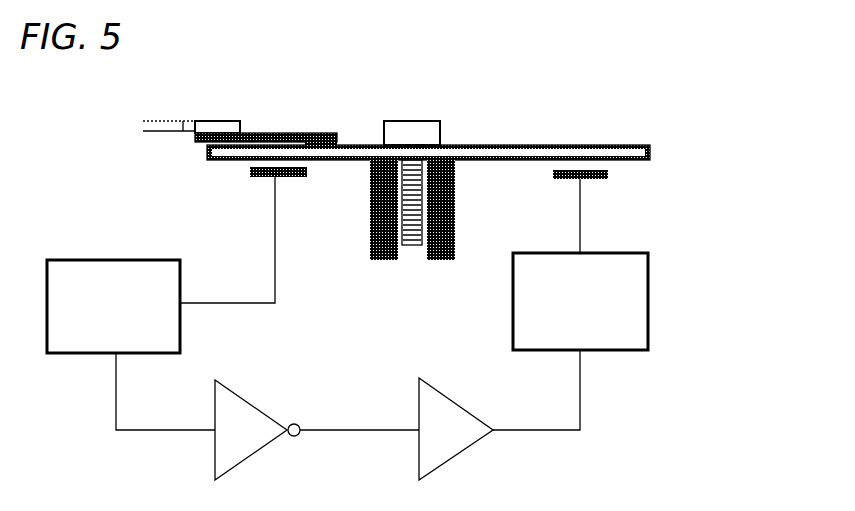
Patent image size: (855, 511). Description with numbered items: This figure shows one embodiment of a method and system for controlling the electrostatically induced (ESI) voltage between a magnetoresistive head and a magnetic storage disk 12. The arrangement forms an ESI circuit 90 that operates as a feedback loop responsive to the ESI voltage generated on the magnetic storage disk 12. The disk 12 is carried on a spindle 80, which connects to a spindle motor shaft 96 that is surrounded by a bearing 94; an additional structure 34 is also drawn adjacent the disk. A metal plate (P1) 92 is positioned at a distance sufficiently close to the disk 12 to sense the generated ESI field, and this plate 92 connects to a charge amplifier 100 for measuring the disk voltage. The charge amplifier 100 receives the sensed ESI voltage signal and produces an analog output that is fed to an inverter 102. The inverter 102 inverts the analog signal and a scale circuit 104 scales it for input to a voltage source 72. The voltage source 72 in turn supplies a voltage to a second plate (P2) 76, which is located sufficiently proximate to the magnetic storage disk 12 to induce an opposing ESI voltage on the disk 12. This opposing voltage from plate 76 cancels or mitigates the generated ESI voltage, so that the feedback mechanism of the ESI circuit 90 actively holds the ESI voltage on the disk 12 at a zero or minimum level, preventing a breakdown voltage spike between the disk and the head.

The ESI circuit 90 is at (722, 98).
The magnetic storage disk 12 is at (548, 153).
The slider assembly 34 is at (183, 130).
The spindle 80 is at (408, 116).
The bearing 94 is at (370, 250).
The spindle motor shaft 96 is at (422, 247).
The plate (P1) 92 is at (270, 178).
The plate (P2) 76 is at (597, 165).
The charge amplifier 100 is at (113, 306).
The voltage source 72 is at (580, 301).
The inverter 102 is at (257, 430).
The scale circuit 104 is at (456, 429).